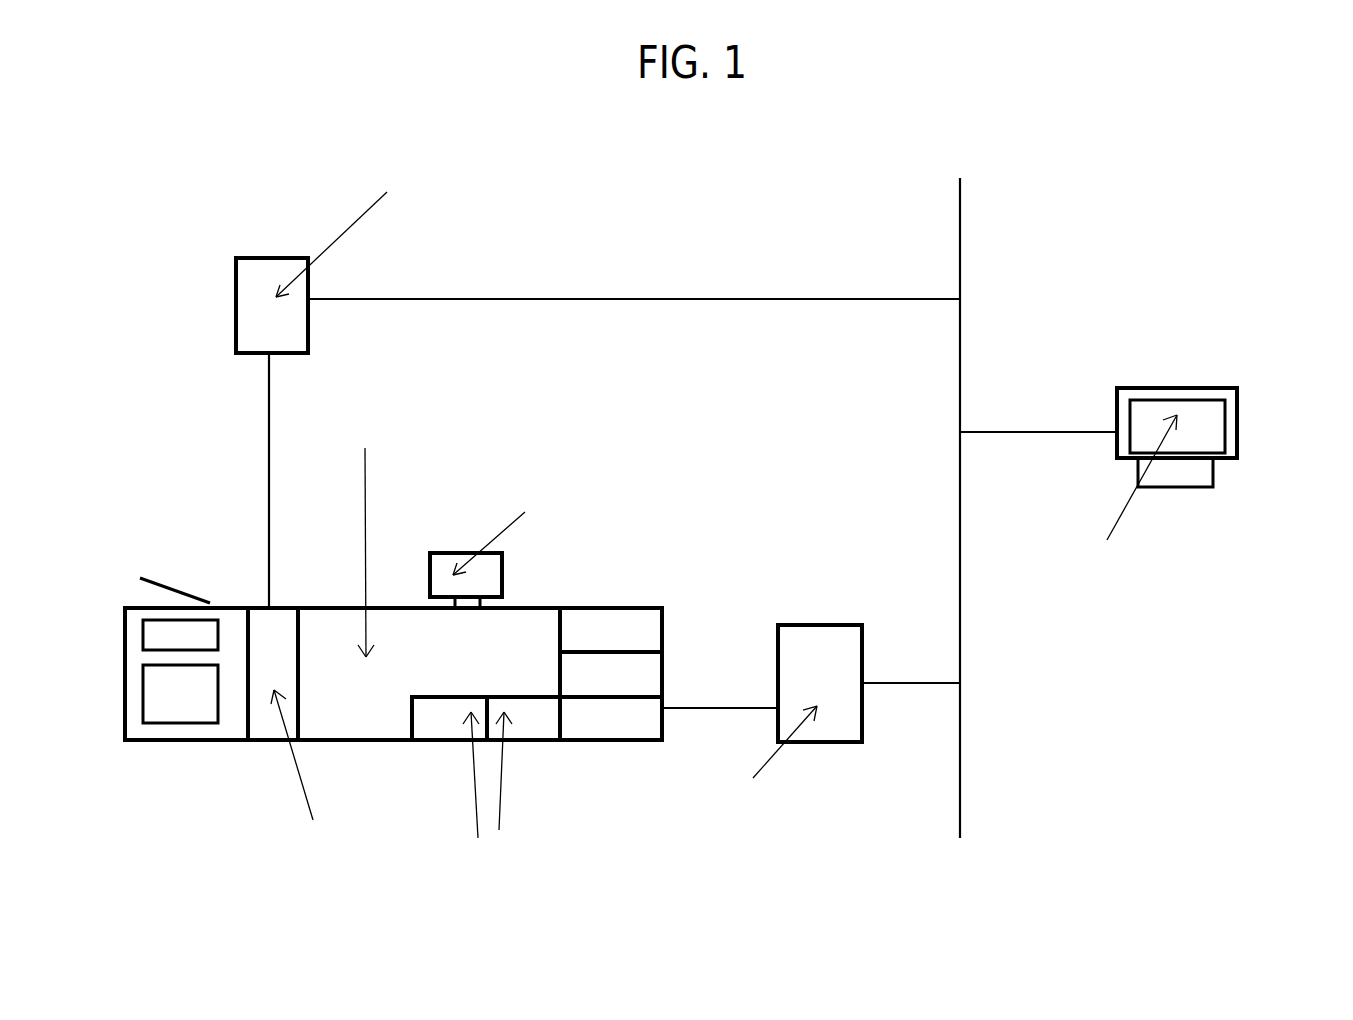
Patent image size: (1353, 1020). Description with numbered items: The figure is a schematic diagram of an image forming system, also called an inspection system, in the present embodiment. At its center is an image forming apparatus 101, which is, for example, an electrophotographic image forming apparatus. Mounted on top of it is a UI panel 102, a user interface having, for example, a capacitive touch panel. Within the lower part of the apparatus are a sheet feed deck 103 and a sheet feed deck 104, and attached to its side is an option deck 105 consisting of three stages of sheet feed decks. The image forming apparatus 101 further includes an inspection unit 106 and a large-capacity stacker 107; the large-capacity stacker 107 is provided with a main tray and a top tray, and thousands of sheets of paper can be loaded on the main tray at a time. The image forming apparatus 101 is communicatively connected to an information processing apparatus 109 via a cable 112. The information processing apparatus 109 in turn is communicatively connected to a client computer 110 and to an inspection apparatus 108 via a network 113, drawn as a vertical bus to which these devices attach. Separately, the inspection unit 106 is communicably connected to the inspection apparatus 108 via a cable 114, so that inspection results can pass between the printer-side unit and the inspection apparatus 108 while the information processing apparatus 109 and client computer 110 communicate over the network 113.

The image forming apparatus 101 is at (334, 608).
The UI panel 102 is at (432, 560).
The sheet feed deck 103 is at (452, 742).
The sheet feed deck 104 is at (521, 742).
The option deck 105 is at (600, 607).
The inspection unit 106 is at (266, 742).
The large-capacity stacker 107 is at (133, 742).
The inspection apparatus 108 is at (253, 258).
The information processing apparatus 109 is at (814, 625).
The client computer 110 is at (1170, 388).
The cable 112 is at (722, 706).
The network 113 is at (960, 838).
The cable 114 is at (269, 472).